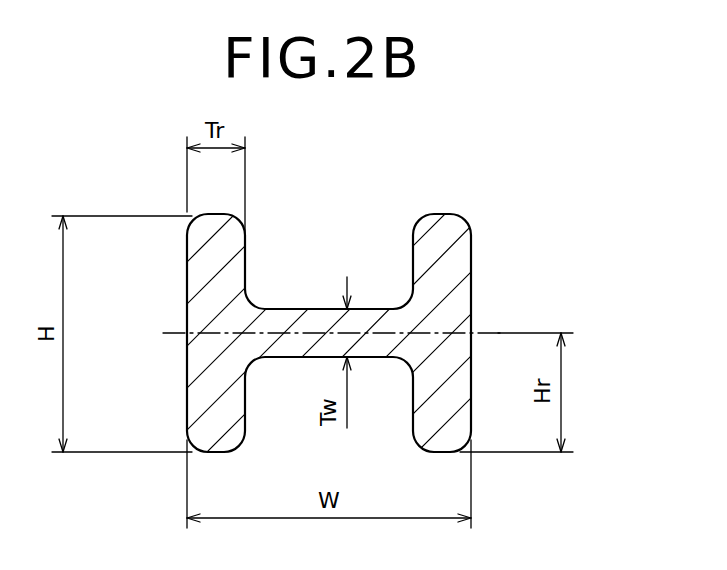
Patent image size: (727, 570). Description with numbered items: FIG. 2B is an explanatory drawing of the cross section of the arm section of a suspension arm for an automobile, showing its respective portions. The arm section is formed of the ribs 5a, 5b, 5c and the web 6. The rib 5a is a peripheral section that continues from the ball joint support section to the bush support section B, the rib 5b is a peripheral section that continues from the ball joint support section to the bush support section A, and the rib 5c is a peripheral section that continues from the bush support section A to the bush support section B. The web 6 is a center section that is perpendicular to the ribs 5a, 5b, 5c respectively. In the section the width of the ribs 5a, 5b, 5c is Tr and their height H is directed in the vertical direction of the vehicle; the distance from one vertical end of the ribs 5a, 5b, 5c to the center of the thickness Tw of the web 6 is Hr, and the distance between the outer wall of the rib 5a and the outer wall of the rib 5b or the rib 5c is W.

The rib 5a is at (195, 272).
The rib 5b is at (462, 272).
The rib 5c is at (489, 333).
The web 6 is at (313, 322).